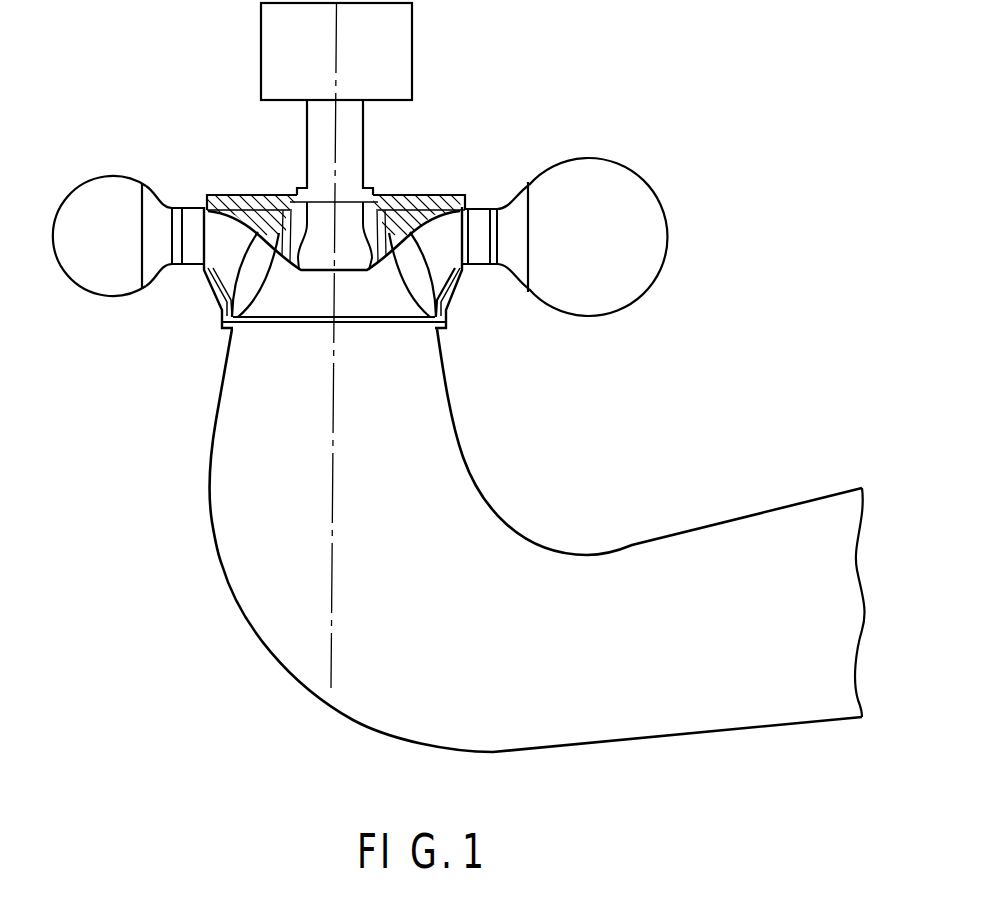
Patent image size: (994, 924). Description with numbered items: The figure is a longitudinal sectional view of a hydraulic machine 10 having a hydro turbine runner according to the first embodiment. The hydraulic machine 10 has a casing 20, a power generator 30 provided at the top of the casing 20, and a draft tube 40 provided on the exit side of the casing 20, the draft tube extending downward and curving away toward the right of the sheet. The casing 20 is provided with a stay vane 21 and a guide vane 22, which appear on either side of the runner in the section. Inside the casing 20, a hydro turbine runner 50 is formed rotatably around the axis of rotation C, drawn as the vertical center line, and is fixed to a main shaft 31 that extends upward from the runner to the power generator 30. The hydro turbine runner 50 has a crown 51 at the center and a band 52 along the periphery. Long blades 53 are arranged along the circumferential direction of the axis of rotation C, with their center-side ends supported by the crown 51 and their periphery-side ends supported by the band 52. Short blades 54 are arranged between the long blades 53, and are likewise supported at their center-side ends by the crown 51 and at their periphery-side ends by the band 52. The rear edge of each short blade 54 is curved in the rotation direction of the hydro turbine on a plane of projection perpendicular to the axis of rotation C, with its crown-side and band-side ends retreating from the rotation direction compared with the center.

The hydraulic machine 10 is at (639, 172).
The casing 20 is at (652, 239).
The stay vane 21 is at (510, 208).
The guide vane 22 is at (480, 218).
The power generator 30 is at (403, 52).
The main shaft 31 is at (318, 132).
The draft tube 40 is at (485, 502).
The hydro turbine runner 50 is at (412, 195).
The crown 51 is at (248, 212).
The band 52 is at (213, 292).
The long blades 53 is at (434, 310).
The short blades 54 is at (442, 265).
The axis of rotation C is at (331, 562).